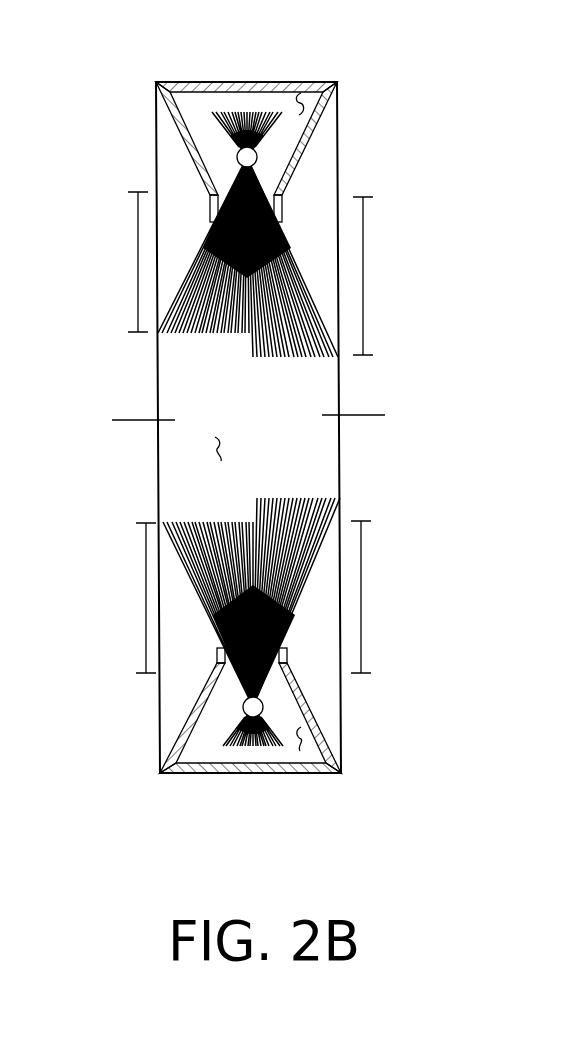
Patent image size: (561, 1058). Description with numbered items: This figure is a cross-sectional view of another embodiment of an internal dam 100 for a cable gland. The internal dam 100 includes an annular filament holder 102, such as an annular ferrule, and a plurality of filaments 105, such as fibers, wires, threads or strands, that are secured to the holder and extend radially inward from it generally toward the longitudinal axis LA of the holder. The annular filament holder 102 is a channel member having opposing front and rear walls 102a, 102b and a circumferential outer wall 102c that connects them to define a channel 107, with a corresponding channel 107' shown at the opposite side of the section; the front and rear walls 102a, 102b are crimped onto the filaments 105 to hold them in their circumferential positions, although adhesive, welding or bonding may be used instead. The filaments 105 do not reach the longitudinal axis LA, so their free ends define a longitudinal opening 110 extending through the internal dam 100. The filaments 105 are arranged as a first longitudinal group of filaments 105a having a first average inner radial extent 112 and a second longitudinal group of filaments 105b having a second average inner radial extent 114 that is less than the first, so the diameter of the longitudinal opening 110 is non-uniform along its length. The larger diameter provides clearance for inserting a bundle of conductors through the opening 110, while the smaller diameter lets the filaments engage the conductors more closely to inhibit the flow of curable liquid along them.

The internal dam 100 is at (336, 474).
The annular filament holder 102 is at (273, 788).
The front wall 102a is at (178, 147).
The rear wall 102b is at (312, 140).
The circumferential outer wall 102c is at (249, 82).
The plurality of filaments 105 is at (296, 219).
The first longitudinal group of filaments 105a is at (316, 317).
The second longitudinal group of filaments 105b is at (176, 288).
The channel 107 is at (356, 93).
The channel 107' is at (369, 722).
The longitudinal opening 110 is at (218, 448).
The first average inner radial extent 112 is at (384, 435).
The second average inner radial extent 114 is at (121, 432).
The longitudinal axis LA is at (246, 416).